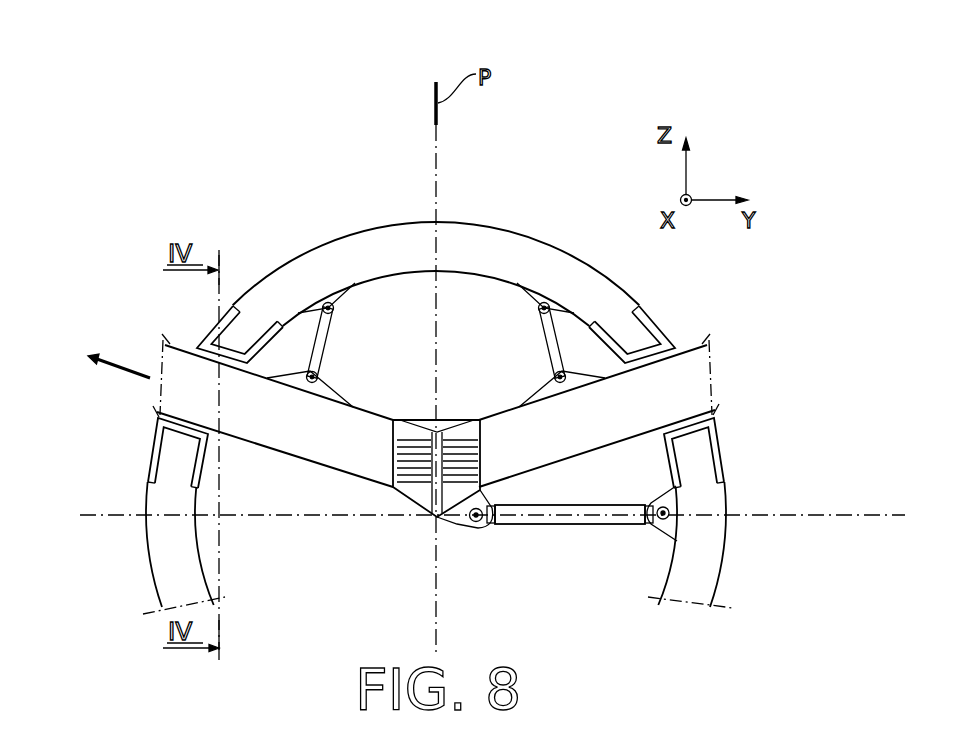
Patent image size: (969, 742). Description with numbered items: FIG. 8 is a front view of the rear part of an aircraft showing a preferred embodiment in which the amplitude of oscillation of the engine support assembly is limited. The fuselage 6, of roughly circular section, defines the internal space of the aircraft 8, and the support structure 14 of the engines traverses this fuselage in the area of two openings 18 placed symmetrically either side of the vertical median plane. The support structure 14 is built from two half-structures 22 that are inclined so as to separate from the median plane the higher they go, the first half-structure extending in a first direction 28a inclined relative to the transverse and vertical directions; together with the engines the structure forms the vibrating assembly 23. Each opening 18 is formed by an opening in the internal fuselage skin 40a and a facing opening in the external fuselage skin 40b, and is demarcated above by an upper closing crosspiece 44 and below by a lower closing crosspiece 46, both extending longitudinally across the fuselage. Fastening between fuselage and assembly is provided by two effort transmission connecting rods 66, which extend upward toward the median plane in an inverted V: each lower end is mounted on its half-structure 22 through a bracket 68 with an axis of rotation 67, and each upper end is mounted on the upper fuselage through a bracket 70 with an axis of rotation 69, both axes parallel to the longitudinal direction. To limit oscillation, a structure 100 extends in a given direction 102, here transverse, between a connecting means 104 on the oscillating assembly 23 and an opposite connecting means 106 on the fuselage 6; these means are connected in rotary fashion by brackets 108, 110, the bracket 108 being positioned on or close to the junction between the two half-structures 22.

The fuselage 6 is at (457, 221).
The internal fuselage skin 40a is at (297, 311).
The external fuselage skin 40b is at (373, 237).
The upper closing crosspiece 44 is at (268, 338).
The axis of rotation 69 is at (328, 302).
The bracket 70 is at (337, 306).
The effort transmission connecting rod 66 is at (322, 344).
The axis of rotation 67 is at (312, 383).
The bracket 68 is at (327, 390).
The half-structure 22 is at (351, 484).
The vibrating assembly 23 is at (637, 449).
The support structure 14 is at (410, 540).
The internal space of the aircraft 8 is at (459, 346).
The bracket 108 is at (455, 520).
The connecting means 104 is at (491, 527).
The structure 100 is at (559, 530).
The connecting means 106 is at (646, 530).
The opening 18 is at (160, 413).
The given direction 102 is at (95, 514).
The lower closing crosspiece 46 is at (198, 457).
The bracket 110 is at (678, 526).
The first direction 28a is at (122, 370).